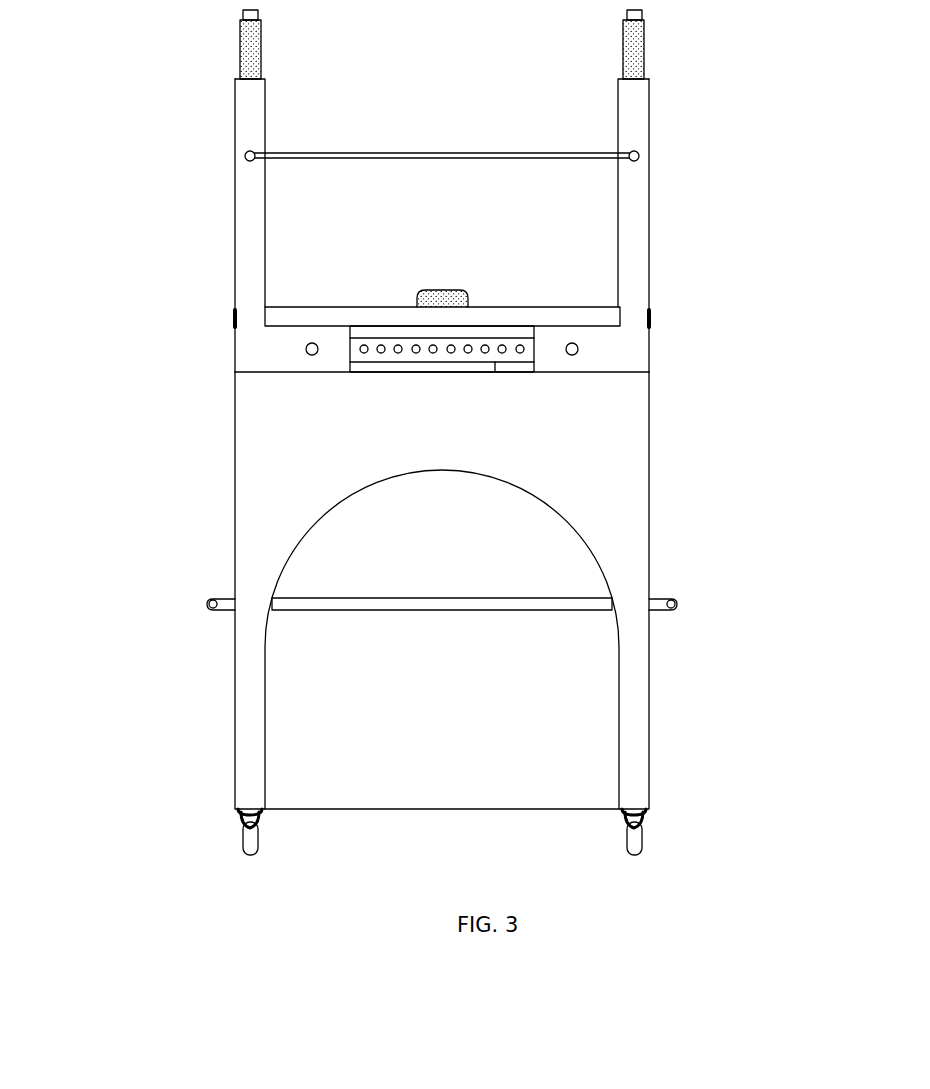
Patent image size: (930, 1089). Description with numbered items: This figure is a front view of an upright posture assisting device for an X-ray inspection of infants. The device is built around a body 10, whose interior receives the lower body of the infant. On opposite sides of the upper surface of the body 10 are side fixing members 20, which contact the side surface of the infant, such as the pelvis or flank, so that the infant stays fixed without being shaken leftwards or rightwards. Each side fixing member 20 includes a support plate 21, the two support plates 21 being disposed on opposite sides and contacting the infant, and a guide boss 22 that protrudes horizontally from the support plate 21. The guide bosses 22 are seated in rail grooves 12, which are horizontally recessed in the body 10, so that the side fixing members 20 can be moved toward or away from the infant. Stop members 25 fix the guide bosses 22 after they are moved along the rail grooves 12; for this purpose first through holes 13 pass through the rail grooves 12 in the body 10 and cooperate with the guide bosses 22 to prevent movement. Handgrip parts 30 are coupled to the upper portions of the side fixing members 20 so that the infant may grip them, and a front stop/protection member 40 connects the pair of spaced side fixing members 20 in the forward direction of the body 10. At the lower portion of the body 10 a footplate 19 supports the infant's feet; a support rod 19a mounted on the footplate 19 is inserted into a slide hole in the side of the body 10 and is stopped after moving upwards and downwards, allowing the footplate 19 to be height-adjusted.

The body 10 is at (615, 505).
The rail groove 12 is at (495, 365).
The first through hole 13 is at (433, 357).
The footplate 19 is at (445, 602).
The support rod 19a is at (677, 605).
The side fixing member 20 is at (213, 173).
The support plate 21 is at (640, 251).
The guide boss 22 is at (600, 365).
The stop member 25 is at (306, 349).
The handgrip part 30 is at (240, 41).
The front stop/protection member 40 is at (406, 153).